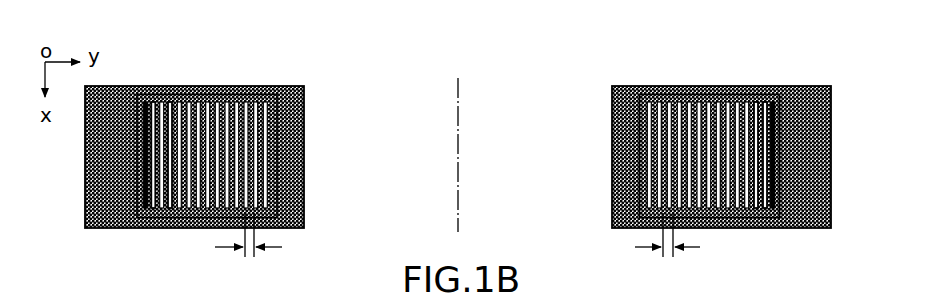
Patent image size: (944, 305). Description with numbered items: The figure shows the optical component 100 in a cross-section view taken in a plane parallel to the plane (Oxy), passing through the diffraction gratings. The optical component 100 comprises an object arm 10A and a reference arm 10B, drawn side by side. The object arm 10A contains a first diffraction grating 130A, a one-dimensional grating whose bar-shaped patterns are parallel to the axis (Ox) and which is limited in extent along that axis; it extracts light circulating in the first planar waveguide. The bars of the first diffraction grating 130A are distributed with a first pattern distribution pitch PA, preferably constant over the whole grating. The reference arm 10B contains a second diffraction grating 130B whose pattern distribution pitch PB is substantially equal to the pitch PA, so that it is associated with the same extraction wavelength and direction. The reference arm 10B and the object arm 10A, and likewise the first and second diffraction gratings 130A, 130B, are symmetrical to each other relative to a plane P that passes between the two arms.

The optical component 100 is at (156, 70).
The object arm 10A is at (265, 73).
The reference arm 10B is at (652, 75).
The first diffraction grating 130A is at (158, 218).
The second diffraction grating 130B is at (757, 218).
The first pattern distribution pitch PA is at (254, 247).
The pattern distribution pitch PB is at (662, 247).
The plane P is at (458, 102).